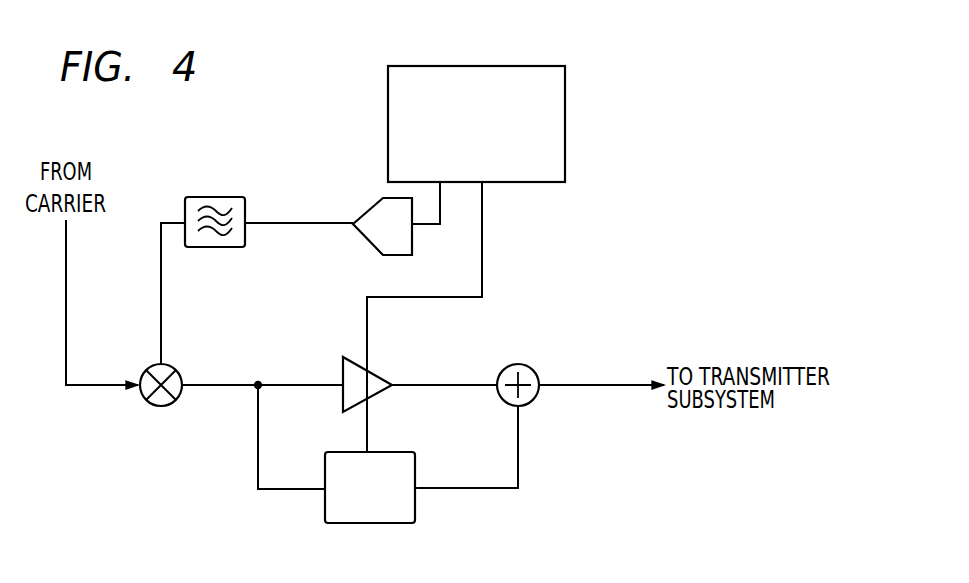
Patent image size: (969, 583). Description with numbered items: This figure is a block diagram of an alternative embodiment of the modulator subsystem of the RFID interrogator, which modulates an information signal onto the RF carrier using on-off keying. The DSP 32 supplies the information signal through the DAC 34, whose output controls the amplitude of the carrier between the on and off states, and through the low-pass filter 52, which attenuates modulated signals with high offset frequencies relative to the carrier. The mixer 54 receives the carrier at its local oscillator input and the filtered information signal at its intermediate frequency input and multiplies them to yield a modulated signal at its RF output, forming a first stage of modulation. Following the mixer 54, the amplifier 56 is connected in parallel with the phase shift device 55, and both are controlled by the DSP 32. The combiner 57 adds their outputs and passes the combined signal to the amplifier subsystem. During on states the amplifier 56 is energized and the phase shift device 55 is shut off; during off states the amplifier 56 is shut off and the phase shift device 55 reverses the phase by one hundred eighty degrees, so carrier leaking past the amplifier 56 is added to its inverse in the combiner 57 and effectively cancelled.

The DSP 32 is at (465, 66).
The DAC 34 is at (368, 215).
The low-pass filter 52 is at (213, 197).
The mixer 54 is at (163, 407).
The phase shift device 55 is at (370, 523).
The amplifier 56 is at (372, 368).
The combiner 57 is at (530, 363).